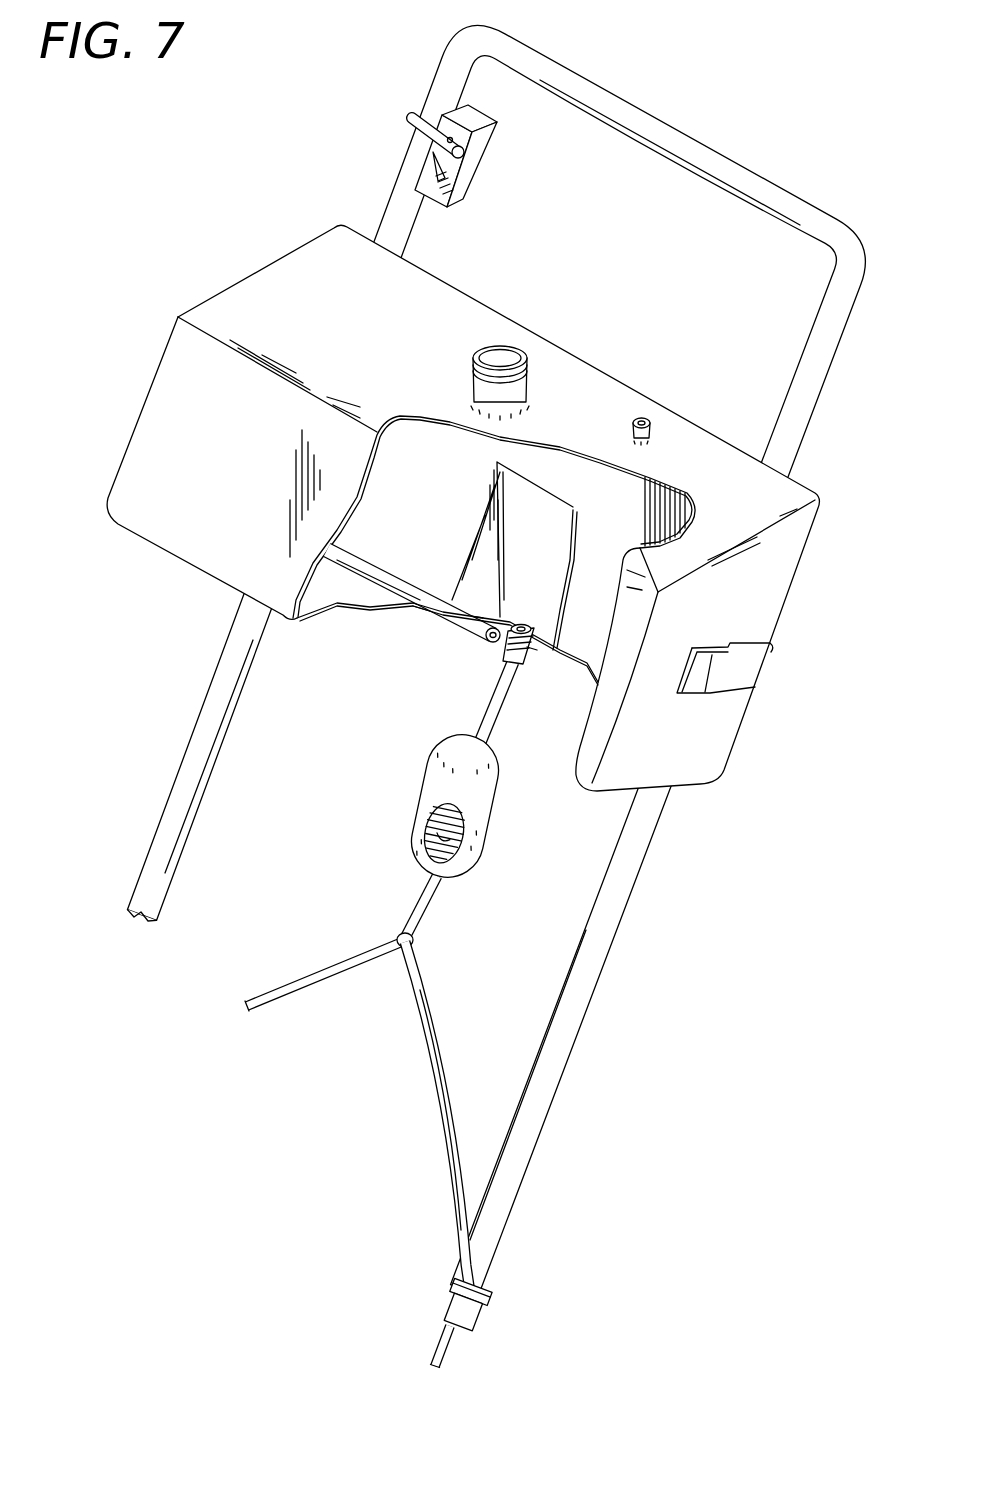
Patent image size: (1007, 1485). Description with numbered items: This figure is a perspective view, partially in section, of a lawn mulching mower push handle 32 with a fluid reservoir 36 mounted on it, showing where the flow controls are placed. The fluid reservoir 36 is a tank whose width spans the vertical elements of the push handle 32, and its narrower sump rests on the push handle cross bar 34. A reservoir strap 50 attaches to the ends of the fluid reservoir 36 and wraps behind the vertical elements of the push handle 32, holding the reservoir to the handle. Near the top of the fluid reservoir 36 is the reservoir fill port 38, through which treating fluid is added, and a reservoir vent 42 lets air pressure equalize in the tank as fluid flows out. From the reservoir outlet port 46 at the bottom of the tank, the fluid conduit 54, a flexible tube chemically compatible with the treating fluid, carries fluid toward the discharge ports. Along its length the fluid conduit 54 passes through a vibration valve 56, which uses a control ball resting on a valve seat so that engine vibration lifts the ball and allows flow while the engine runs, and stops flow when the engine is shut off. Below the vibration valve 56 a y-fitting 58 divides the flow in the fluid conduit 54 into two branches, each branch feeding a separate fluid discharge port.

The push handle 32 is at (227, 668).
The push handle cross bar 34 is at (450, 627).
The fluid reservoir 36 is at (208, 303).
The reservoir fill port 38 is at (527, 371).
The reservoir vent 42 is at (648, 424).
The reservoir outlet port 46 is at (523, 620).
The reservoir strap 50 is at (760, 665).
The fluid conduit 54 is at (424, 1036).
The vibration valve 56 is at (500, 791).
The y-fitting 58 is at (386, 950).